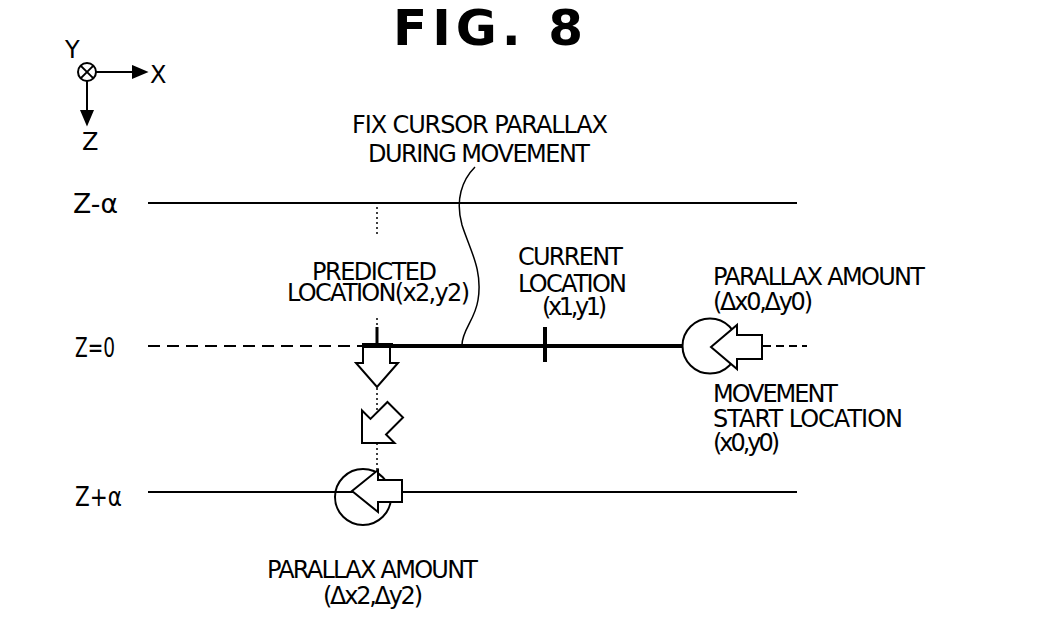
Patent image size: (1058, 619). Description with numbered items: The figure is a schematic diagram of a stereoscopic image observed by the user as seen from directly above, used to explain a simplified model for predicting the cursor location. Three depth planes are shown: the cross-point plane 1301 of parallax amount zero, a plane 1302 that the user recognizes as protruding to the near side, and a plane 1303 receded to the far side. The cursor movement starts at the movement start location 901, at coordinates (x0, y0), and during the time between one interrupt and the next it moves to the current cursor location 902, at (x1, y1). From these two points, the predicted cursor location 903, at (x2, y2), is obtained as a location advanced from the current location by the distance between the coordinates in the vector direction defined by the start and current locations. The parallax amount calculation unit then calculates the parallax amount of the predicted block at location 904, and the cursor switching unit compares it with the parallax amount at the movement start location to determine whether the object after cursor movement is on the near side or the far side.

The movement start location 901 is at (692, 372).
The current cursor location 902 is at (547, 356).
The predicted cursor location 903 is at (378, 328).
The location of predicted block parallax amount 904 is at (387, 513).
The cross-point plane 1301 is at (195, 346).
The plane protruding to the near side 1302 is at (194, 492).
The plane receded to the far side 1303 is at (192, 203).